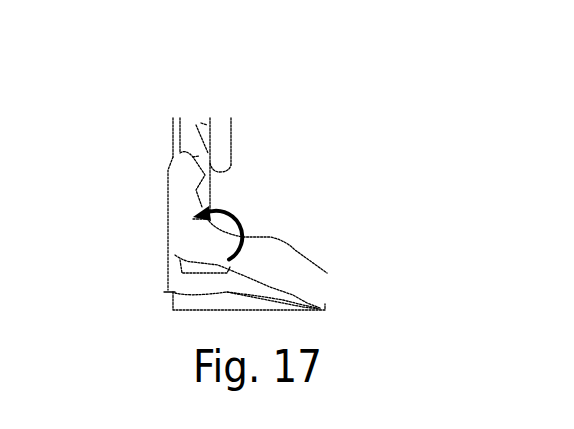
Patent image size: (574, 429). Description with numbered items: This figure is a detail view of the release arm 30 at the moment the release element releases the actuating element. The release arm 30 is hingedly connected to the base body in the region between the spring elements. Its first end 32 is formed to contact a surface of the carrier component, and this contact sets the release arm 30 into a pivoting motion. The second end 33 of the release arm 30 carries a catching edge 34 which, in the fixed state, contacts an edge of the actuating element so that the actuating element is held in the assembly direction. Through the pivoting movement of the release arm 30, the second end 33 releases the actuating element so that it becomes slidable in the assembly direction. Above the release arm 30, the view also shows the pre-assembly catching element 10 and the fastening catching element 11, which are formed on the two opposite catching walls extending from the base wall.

The pre-assembly catching element 10 is at (202, 128).
The fastening catching element 11 is at (199, 156).
The release arm 30 is at (282, 262).
The first end of the release arm 32 is at (323, 304).
The second end of the release arm 33 is at (176, 168).
The catching edge 34 is at (197, 168).